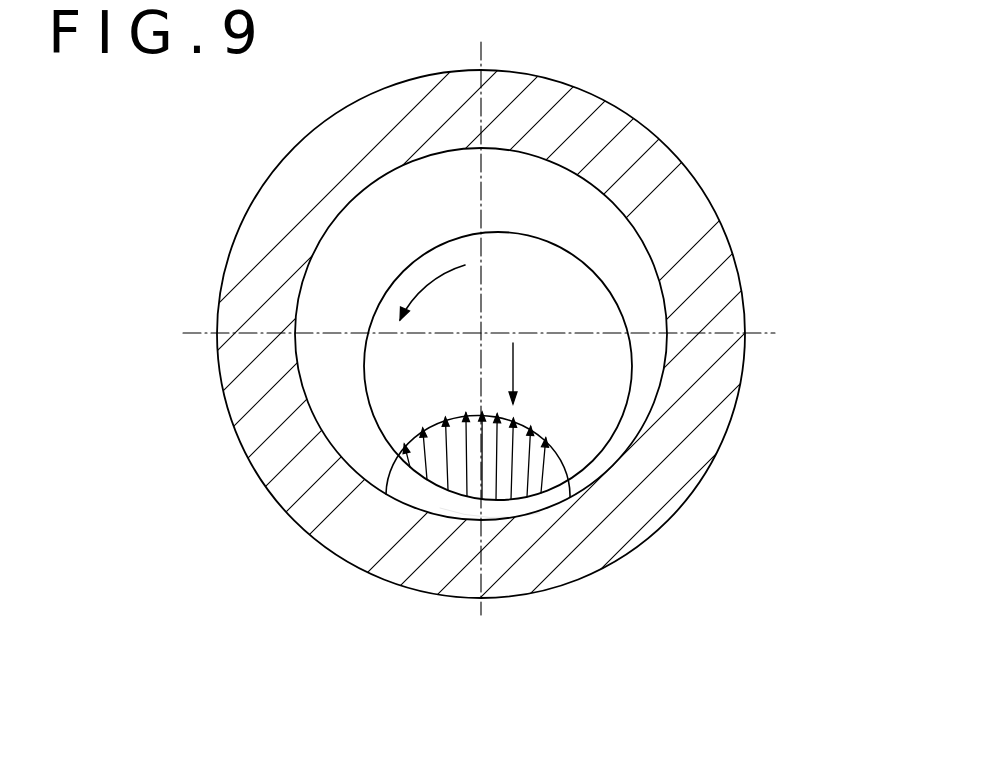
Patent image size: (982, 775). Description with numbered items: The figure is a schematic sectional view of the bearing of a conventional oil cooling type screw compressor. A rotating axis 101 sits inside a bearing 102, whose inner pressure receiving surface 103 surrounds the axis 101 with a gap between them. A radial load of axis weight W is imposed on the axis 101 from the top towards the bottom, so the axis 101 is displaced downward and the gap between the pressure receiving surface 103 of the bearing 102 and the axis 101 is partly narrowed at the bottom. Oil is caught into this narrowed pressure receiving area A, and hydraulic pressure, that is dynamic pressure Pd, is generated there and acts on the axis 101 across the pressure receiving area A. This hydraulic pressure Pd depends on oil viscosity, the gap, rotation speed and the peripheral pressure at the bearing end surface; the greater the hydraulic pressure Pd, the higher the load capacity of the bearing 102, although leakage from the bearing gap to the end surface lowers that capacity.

The axis 101 is at (625, 311).
The bearing 102 is at (720, 445).
The pressure receiving surface 103 is at (291, 300).
The pressure receiving area A is at (520, 519).
The axis weight W is at (527, 373).
The hydraulic pressure Pd is at (552, 436).